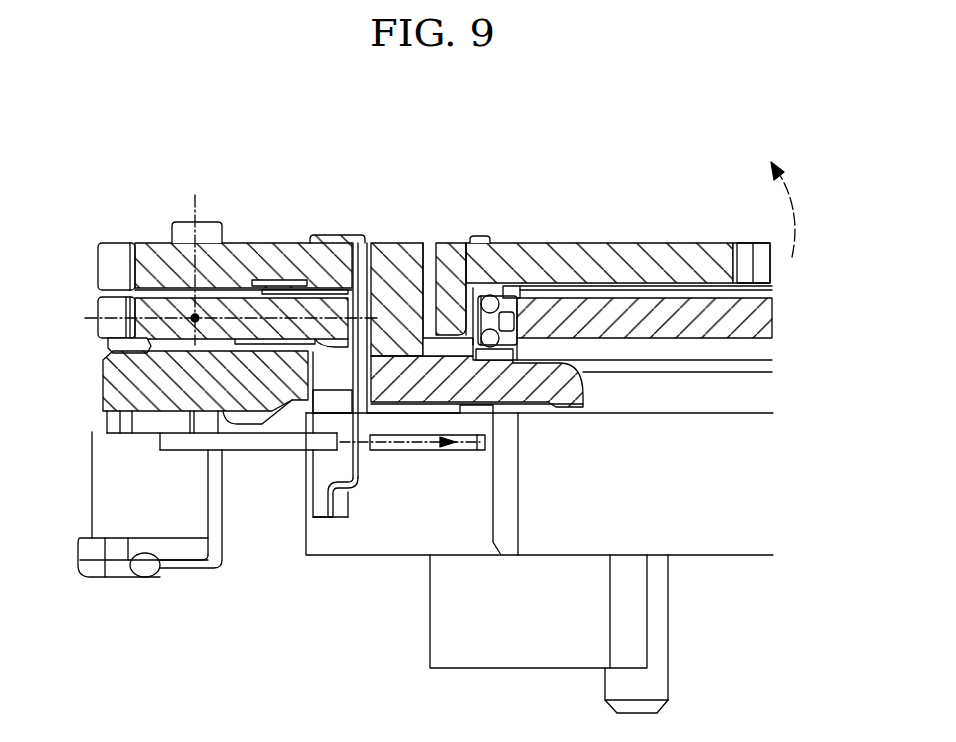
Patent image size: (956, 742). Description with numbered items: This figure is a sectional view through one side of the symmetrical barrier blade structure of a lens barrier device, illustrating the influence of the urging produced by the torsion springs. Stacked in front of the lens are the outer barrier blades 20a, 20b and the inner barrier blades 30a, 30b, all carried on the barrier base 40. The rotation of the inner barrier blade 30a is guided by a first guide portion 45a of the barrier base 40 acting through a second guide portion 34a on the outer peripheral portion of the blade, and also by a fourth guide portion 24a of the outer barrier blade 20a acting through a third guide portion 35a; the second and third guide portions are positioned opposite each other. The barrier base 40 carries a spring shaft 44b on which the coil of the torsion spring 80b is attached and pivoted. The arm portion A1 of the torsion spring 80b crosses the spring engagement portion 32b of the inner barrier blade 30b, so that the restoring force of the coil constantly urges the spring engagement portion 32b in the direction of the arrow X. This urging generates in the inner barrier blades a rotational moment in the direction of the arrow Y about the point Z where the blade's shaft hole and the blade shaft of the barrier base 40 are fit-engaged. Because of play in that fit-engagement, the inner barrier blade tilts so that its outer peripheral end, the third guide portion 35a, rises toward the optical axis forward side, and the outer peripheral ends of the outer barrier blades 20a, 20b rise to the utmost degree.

The outer barrier blade 20a is at (612, 242).
The outer barrier blade 20b is at (135, 268).
The inner barrier blade 30a is at (682, 318).
The inner barrier blade 30b is at (128, 312).
The barrier base 40 is at (125, 381).
The spring shaft 44b is at (105, 425).
The torsion spring 80b is at (108, 497).
The spring engagement portion 32b is at (320, 468).
The fourth guide portion 24a is at (473, 290).
The third guide portion 35a is at (492, 300).
The first guide portion 45a is at (497, 347).
The second guide portion 34a is at (515, 342).
The arm portion A1 is at (268, 442).
The arrow X is at (383, 445).
The arrow Y is at (797, 209).
The point Z is at (198, 314).